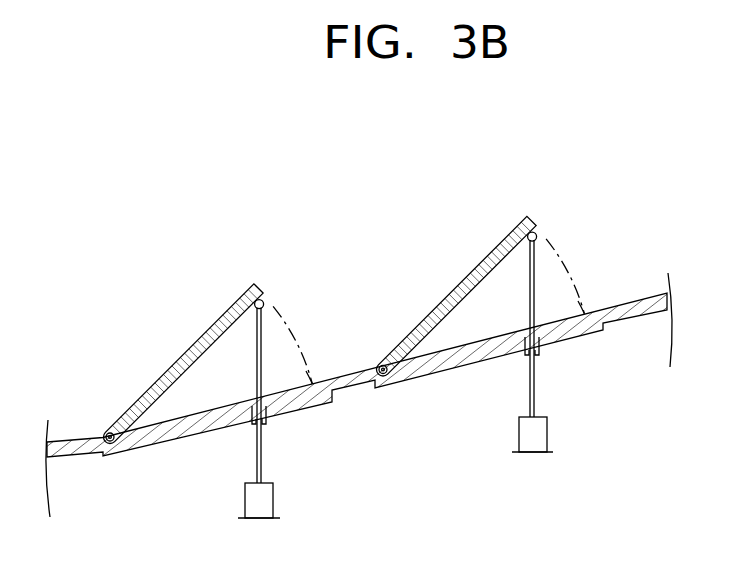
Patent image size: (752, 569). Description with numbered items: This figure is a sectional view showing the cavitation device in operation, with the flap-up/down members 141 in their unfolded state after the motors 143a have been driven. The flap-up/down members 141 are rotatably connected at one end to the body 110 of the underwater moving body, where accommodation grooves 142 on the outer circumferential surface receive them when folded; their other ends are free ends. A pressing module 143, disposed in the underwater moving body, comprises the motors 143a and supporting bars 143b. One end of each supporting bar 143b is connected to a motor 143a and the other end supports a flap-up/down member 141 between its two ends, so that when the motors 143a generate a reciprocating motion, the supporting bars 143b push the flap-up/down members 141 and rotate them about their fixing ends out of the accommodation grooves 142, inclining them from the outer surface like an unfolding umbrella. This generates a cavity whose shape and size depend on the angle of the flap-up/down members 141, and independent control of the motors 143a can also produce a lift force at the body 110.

The body 110 is at (76, 430).
The flap-up/down members 141 is at (475, 270).
The accommodation grooves 142 is at (567, 320).
The pressing module 143 is at (442, 379).
The motors 143a is at (519, 436).
The supporting bars 143b is at (535, 388).